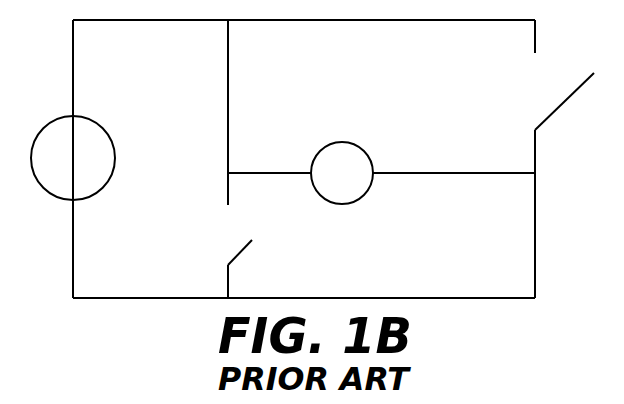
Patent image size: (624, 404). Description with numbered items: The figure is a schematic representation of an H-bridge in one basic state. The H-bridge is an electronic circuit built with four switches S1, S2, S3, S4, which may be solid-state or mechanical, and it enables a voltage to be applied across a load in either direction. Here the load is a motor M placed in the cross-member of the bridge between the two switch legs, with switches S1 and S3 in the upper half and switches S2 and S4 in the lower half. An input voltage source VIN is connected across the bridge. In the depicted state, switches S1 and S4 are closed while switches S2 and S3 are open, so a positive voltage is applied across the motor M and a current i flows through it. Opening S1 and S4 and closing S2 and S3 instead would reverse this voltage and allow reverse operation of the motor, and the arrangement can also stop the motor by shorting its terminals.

The switch S1 is at (210, 116).
The switch S2 is at (222, 241).
The switch S3 is at (546, 101).
The switch S4 is at (517, 244).
The motor M is at (342, 173).
The input voltage source VIN is at (123, 84).
The motor current i is at (386, 221).